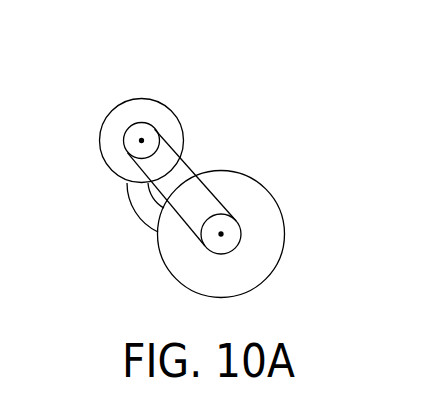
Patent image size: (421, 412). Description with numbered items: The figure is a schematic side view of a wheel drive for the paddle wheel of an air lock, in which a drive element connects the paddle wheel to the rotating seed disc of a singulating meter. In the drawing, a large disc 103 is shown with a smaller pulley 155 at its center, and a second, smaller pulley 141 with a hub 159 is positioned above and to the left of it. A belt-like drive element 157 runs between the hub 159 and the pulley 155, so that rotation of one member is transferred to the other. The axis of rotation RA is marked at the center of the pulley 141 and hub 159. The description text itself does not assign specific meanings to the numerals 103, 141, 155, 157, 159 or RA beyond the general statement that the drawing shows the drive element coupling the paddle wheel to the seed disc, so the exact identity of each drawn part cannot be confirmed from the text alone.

The rotating disk 103 is at (278, 208).
The drive pulley 141 is at (178, 120).
The pulley shaft 155 is at (234, 249).
The belt 157 is at (187, 165).
The hub 159 is at (142, 122).
The rotation axis RA is at (141, 140).